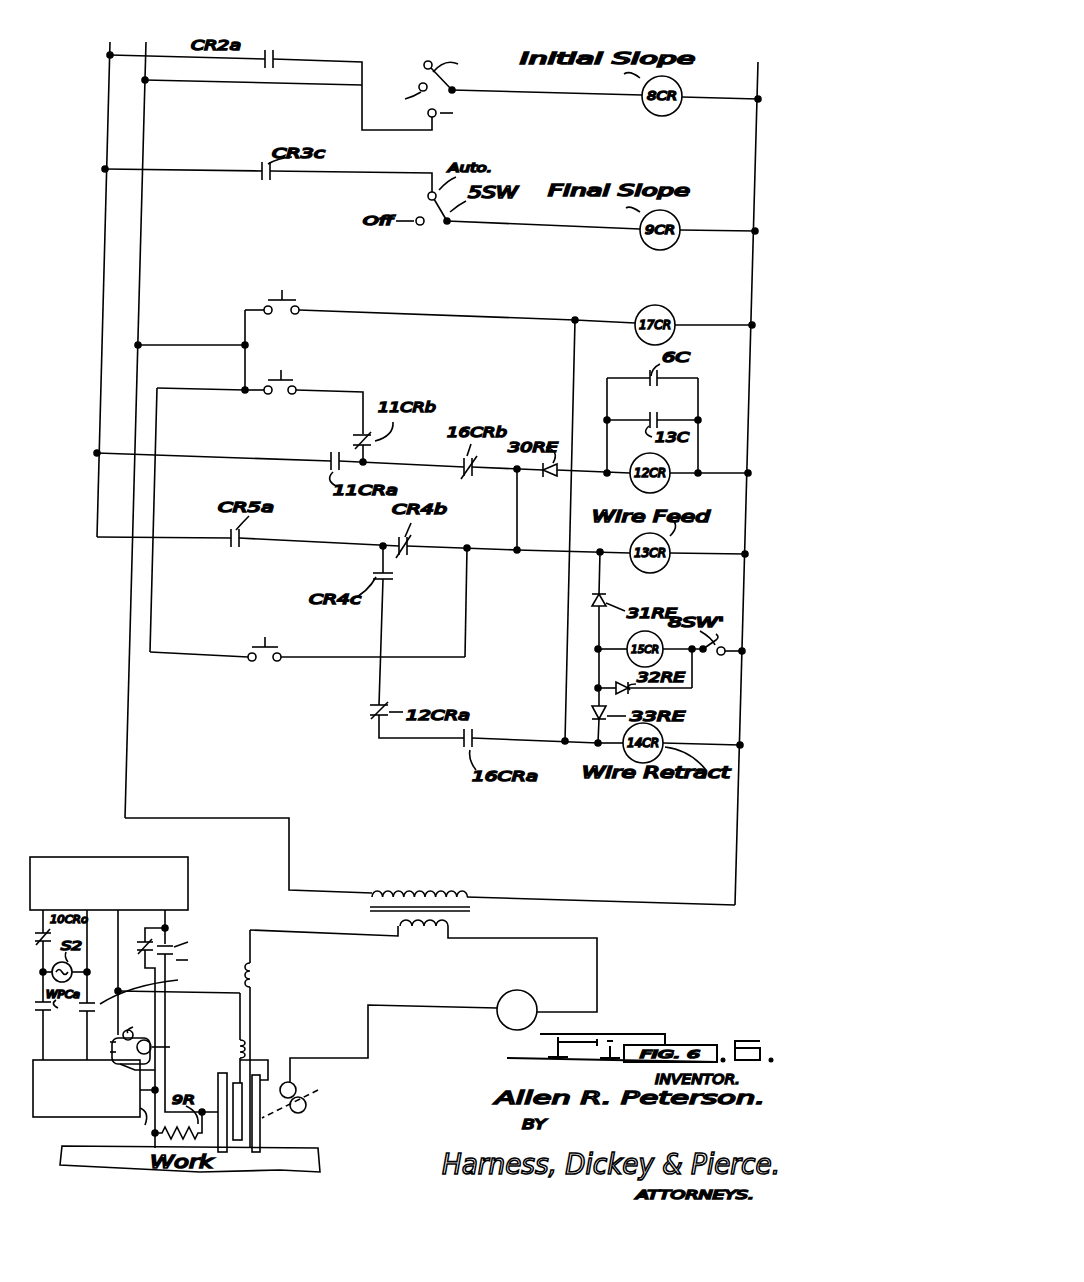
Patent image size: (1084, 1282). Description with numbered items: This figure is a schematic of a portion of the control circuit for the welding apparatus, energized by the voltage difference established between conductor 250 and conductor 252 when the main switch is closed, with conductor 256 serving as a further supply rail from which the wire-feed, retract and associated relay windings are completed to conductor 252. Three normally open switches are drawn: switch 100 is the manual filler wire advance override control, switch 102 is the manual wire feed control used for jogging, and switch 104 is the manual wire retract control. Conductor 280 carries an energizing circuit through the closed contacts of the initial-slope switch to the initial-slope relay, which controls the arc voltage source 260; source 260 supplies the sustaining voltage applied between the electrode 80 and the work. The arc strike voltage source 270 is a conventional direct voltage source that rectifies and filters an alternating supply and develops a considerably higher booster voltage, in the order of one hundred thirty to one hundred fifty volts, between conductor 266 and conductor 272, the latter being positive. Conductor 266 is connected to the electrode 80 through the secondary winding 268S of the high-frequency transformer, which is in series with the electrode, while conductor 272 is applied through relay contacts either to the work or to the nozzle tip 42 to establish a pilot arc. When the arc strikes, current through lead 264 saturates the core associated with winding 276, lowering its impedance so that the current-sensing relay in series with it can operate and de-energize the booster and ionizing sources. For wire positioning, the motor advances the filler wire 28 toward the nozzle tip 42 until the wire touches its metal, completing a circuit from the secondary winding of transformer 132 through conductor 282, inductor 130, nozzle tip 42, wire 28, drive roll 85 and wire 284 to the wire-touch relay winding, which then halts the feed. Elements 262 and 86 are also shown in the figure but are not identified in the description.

The conductor 256 is at (103, 233).
The conductor 250 is at (140, 283).
The conductor 252 is at (756, 286).
The conductor 280 is at (433, 51).
The normally open switch 104 is at (284, 300).
The normally open switch 102 is at (284, 380).
The normally open switch 100 is at (253, 645).
The transformer 132 is at (440, 890).
The conductor 282 is at (352, 936).
The wire 284 is at (440, 993).
The arc strike voltage source 270 is at (163, 857).
The conductor 266 is at (117, 921).
The conductor 272 is at (168, 928).
The inductor 130 is at (256, 980).
The winding 276 is at (150, 1056).
The lead 264 is at (150, 1069).
The arc voltage source 260 is at (40, 1117).
The arc voltage source lead 262 is at (142, 1112).
The nozzle tip 42 is at (218, 1086).
The secondary winding 268S is at (244, 1047).
The electrode 80 is at (261, 1141).
The drive roll 85 is at (292, 1082).
The feed roller 86 is at (300, 1113).
The filler wire 28 is at (322, 1090).